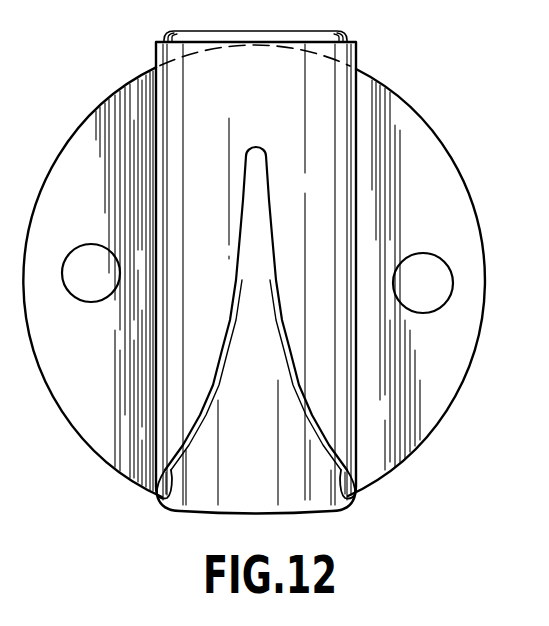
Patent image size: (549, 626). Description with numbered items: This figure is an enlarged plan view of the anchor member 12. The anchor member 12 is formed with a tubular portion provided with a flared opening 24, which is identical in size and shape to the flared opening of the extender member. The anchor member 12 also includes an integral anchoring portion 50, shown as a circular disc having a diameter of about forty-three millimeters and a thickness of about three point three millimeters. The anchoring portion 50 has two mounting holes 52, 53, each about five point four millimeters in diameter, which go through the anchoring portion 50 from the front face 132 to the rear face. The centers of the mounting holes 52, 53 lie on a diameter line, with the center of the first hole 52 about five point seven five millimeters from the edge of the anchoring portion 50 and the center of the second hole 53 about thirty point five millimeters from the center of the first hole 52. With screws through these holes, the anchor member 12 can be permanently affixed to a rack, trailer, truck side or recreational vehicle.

The anchor member 12 is at (108, 479).
The flared opening 24 is at (298, 360).
The anchoring portion 50 is at (95, 366).
The first mounting hole 52 is at (86, 245).
The second mounting hole 53 is at (430, 255).
The front face 132 is at (443, 371).